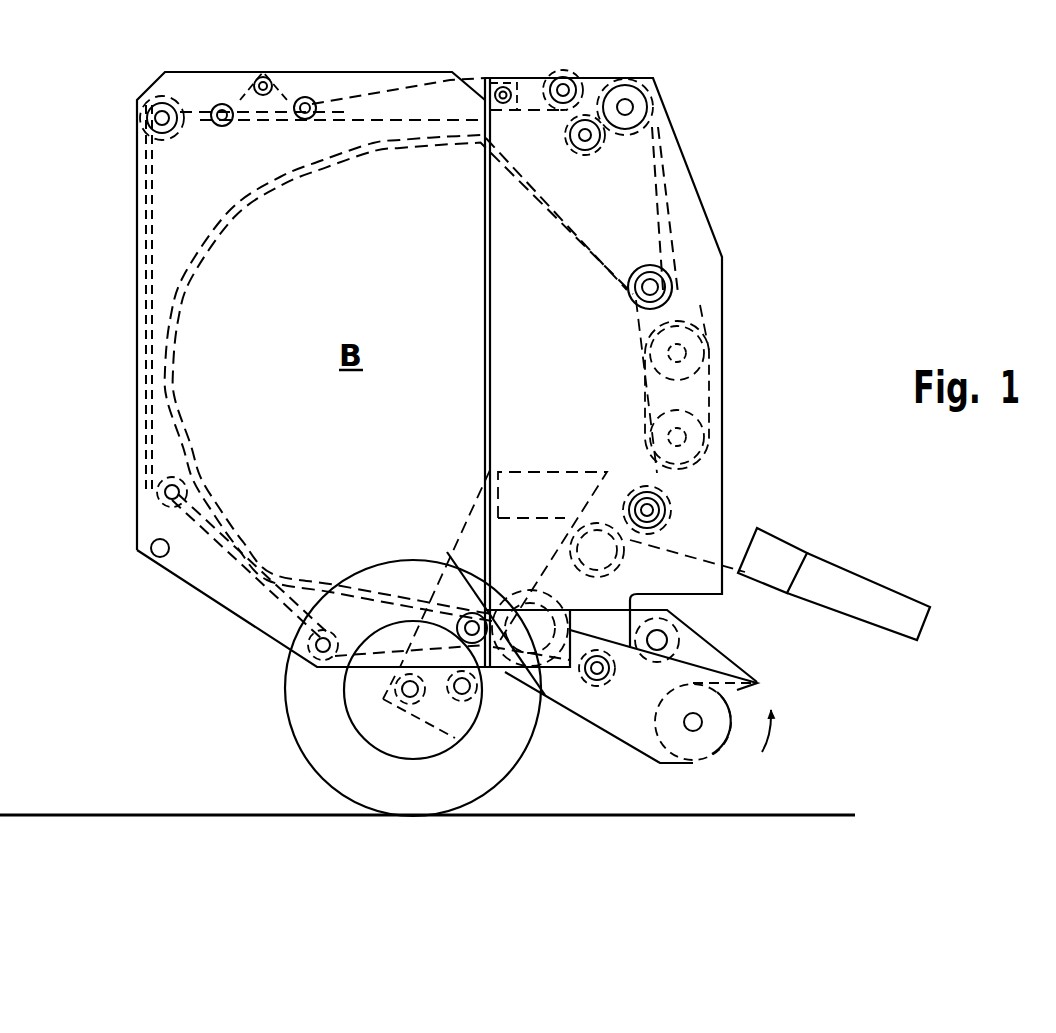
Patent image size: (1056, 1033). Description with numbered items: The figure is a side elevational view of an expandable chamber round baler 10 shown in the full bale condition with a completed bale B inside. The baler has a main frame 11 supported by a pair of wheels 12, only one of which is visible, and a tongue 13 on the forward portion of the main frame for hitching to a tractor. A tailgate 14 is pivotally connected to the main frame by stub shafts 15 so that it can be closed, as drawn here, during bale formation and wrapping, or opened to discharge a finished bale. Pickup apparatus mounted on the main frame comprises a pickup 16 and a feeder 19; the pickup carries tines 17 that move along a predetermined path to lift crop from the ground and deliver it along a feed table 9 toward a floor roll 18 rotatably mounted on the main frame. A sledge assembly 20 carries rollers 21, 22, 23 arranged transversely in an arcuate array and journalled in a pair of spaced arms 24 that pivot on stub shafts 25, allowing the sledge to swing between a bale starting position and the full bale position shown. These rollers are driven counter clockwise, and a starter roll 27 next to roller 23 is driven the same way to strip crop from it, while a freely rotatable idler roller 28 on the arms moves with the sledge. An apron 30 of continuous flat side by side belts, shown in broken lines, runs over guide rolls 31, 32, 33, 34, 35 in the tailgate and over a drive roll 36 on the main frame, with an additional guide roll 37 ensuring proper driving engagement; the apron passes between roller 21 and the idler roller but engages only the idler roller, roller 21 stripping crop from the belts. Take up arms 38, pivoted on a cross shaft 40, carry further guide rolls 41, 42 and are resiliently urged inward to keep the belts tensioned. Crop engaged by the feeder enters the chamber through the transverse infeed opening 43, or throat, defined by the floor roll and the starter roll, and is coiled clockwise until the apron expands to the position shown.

The feed table 9 is at (658, 660).
The round baler 10 is at (725, 118).
The main frame 11 is at (553, 472).
The wheels 12 is at (300, 705).
The tongue 13 is at (887, 593).
The tailgate 14 is at (140, 90).
The stub shafts 15 is at (502, 80).
The pickup 16 is at (750, 742).
The tines 17 is at (684, 765).
The floor roll 18 is at (510, 682).
The feeder 19 is at (585, 700).
The sledge assembly 20 is at (637, 385).
The roller 21 is at (710, 343).
The roller 22 is at (710, 440).
The roller 23 is at (637, 532).
The arms 24 is at (708, 397).
The stub shafts 25 is at (635, 495).
The starter roll 27 is at (572, 547).
The idler roller 28 is at (670, 268).
The apron 30 is at (178, 272).
The guide roll 31 is at (470, 612).
The guide roll 32 is at (323, 640).
The guide roll 33 is at (167, 493).
The guide roll 34 is at (162, 132).
The guide roll 35 is at (262, 72).
The drive roll 36 is at (626, 95).
The guide roll 37 is at (585, 150).
The take up arms 38 is at (393, 84).
The cross shaft 40 is at (588, 42).
The guide roll 41 is at (207, 117).
The guide roll 42 is at (312, 112).
The infeed opening 43 is at (635, 576).